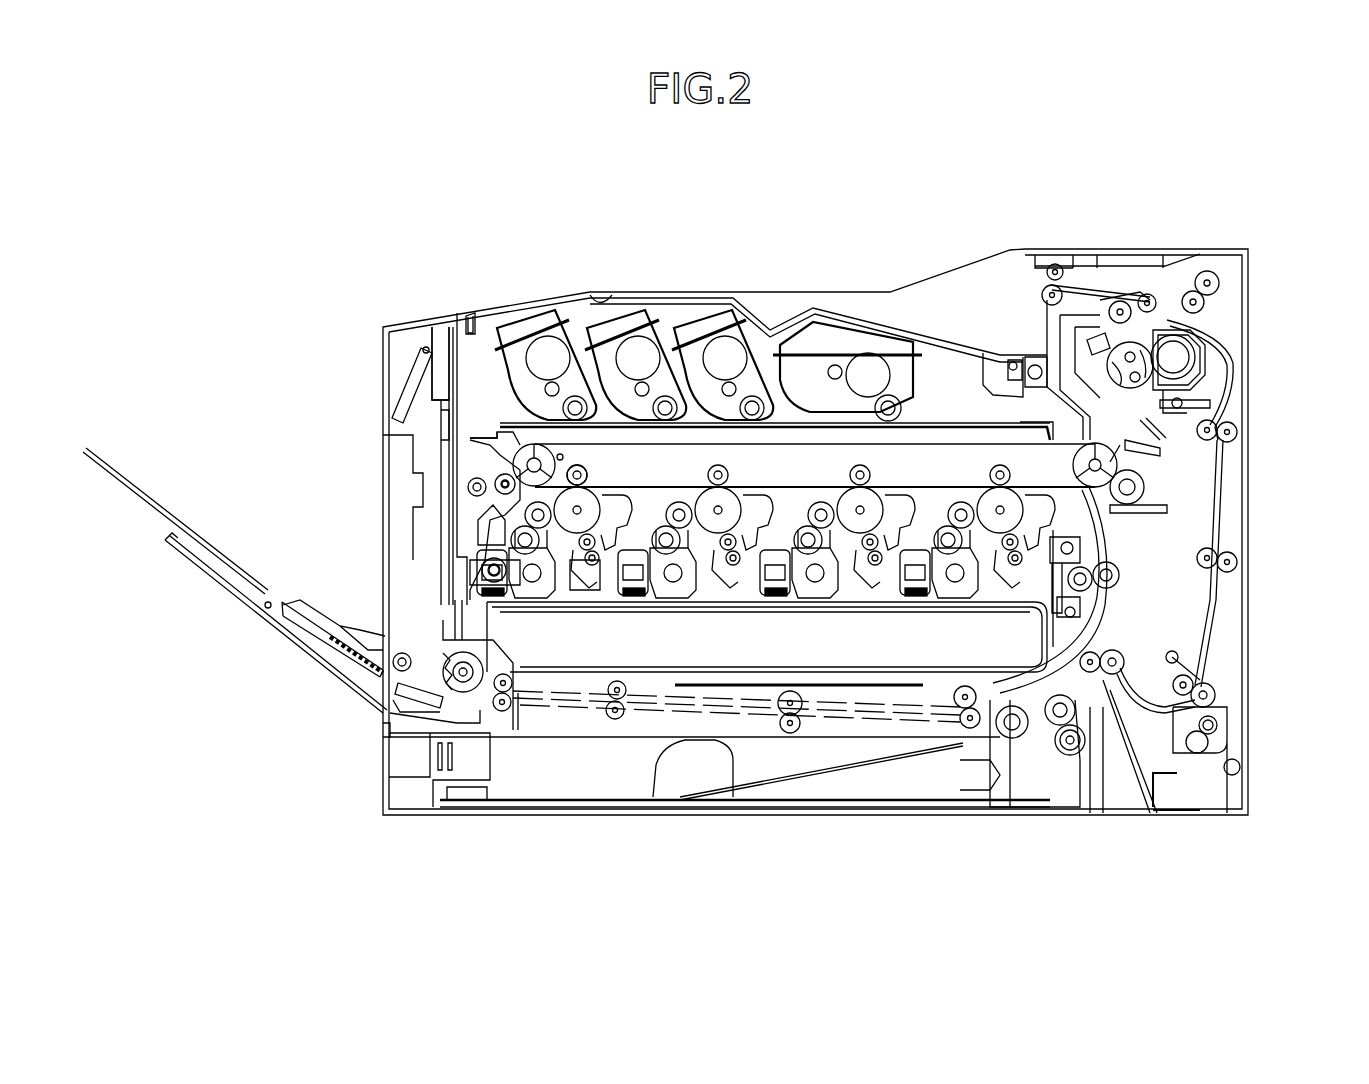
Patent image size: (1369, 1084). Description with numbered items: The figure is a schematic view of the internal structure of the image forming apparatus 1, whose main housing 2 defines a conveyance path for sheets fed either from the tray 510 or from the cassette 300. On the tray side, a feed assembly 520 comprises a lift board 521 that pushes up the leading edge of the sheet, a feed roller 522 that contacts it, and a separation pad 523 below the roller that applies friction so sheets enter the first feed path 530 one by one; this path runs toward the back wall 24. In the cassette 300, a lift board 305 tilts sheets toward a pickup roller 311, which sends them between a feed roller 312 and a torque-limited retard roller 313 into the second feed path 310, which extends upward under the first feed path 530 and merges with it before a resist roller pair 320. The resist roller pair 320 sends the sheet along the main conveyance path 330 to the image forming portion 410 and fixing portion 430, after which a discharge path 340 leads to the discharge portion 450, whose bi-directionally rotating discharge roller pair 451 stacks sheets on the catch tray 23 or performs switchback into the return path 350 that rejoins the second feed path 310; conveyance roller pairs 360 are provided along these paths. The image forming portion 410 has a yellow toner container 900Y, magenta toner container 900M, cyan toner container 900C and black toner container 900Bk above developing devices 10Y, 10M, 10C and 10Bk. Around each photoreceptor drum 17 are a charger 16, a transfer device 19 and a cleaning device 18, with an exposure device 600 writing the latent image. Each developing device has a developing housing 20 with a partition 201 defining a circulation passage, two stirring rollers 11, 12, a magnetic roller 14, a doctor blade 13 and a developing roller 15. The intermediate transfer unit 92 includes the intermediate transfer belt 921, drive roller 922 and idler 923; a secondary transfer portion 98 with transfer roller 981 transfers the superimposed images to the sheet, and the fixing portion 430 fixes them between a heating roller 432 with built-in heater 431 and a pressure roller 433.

The image forming apparatus 1 is at (1266, 197).
The main housing 2 is at (1244, 660).
The stirring roller 11 is at (490, 560).
The stirring roller 12 is at (485, 560).
The doctor blade 13 is at (452, 372).
The magnetic roller 14 is at (480, 523).
The developing roller 15 is at (463, 323).
The charger 16 is at (580, 590).
The photoreceptor drum 17 is at (512, 472).
The cleaning device 18 is at (585, 468).
The transfer device 19 is at (556, 455).
The developing housing 20 is at (470, 590).
The catch tray 23 is at (847, 325).
The back wall 24 is at (1248, 712).
The intermediate transfer unit 92 is at (520, 462).
The secondary transfer portion 98 is at (1145, 490).
The partition 201 is at (430, 565).
The cassette 300 is at (392, 790).
The lift board 305 is at (767, 785).
The second feed path 310 is at (1097, 683).
The pickup roller 311 is at (1015, 740).
The feed roller 312 is at (1058, 725).
The retard roller 313 is at (1072, 757).
The resist roller pair 320 is at (1118, 578).
The main conveyance path 330 is at (1145, 450).
The discharge path 340 is at (1145, 327).
The return path 350 is at (1222, 540).
The conveyance roller pair 360 is at (1207, 270).
The image forming portion 410 is at (412, 368).
The fixing portion 430 is at (1175, 357).
The heater 431 is at (1135, 343).
The heating roller 432 is at (1100, 373).
The pressure roller 433 is at (1213, 327).
The discharge portion 450 is at (1090, 262).
The discharge roller pair 451 is at (1045, 262).
The tray 510 is at (150, 497).
The feed assembly 520 is at (455, 665).
The lift board 521 is at (455, 700).
The feed roller 522 is at (490, 650).
The separation pad 523 is at (462, 640).
The first feed path 530 is at (985, 765).
The exposure device 600 is at (548, 650).
The yellow toner container 900Y is at (510, 322).
The magenta toner container 900M is at (600, 322).
The cyan toner container 900C is at (710, 324).
The black toner container 900Bk is at (847, 337).
The intermediate transfer belt 921 is at (1012, 420).
The drive roller 922 is at (1200, 400).
The idler 923 is at (490, 432).
The transfer roller 981 is at (1150, 512).
The developing device 10Y is at (500, 550).
The developing device 10M is at (638, 497).
The developing device 10C is at (780, 500).
The developing device 10Bk is at (928, 497).